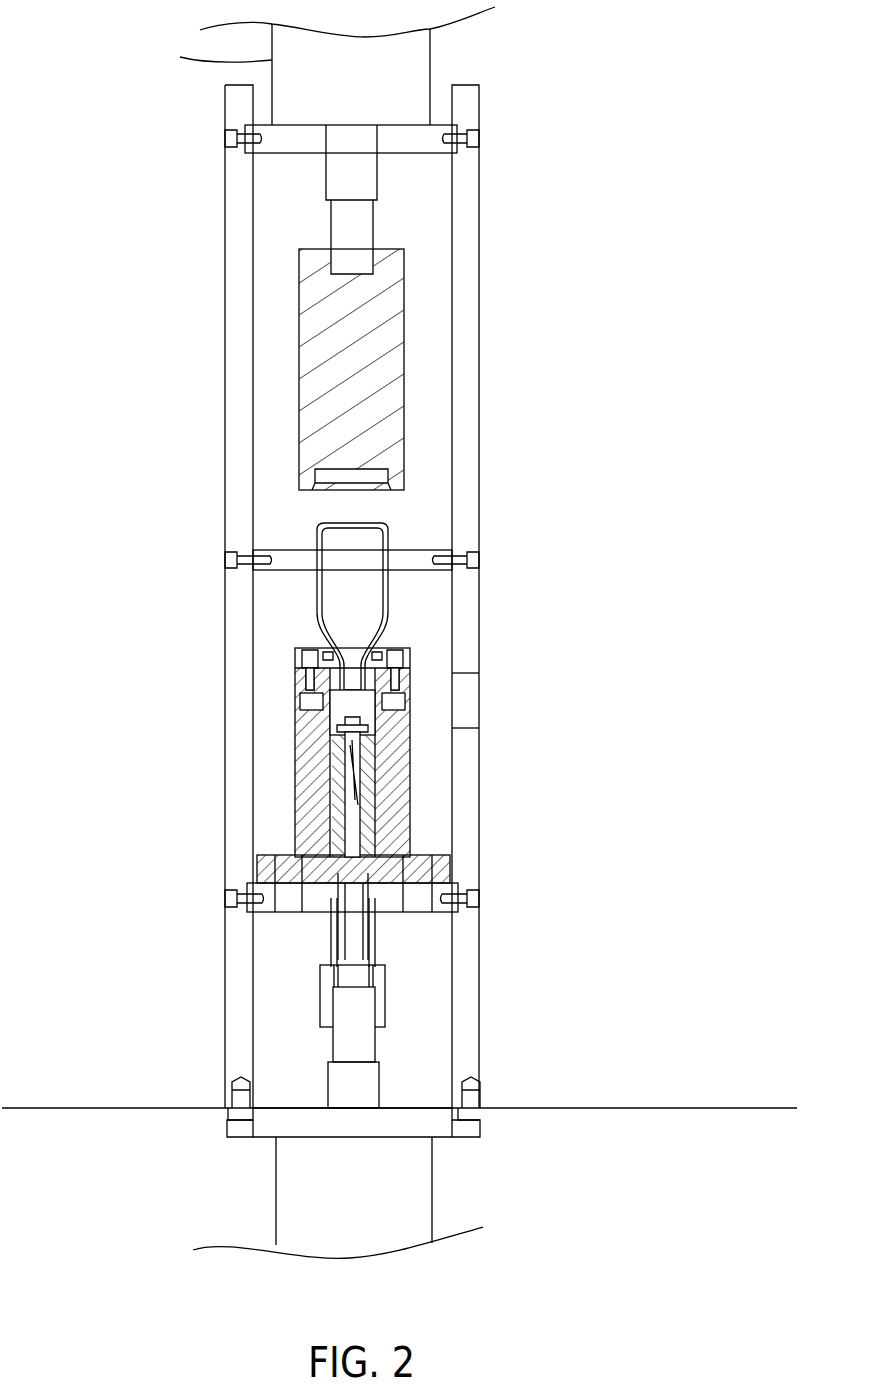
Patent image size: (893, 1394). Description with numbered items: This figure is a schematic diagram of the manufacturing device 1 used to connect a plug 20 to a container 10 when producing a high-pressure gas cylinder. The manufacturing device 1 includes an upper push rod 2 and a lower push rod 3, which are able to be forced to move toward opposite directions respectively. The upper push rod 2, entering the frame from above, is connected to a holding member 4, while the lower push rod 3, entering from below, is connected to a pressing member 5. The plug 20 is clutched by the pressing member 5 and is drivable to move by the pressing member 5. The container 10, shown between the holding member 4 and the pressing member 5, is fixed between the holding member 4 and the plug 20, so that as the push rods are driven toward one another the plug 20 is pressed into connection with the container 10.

The manufacturing device 1 is at (639, 172).
The upper push rod 2 is at (272, 62).
The lower push rod 3 is at (275, 1195).
The holding member 4 is at (405, 337).
The pressing member 5 is at (405, 728).
The container 10 is at (402, 589).
The plug 20 is at (349, 712).